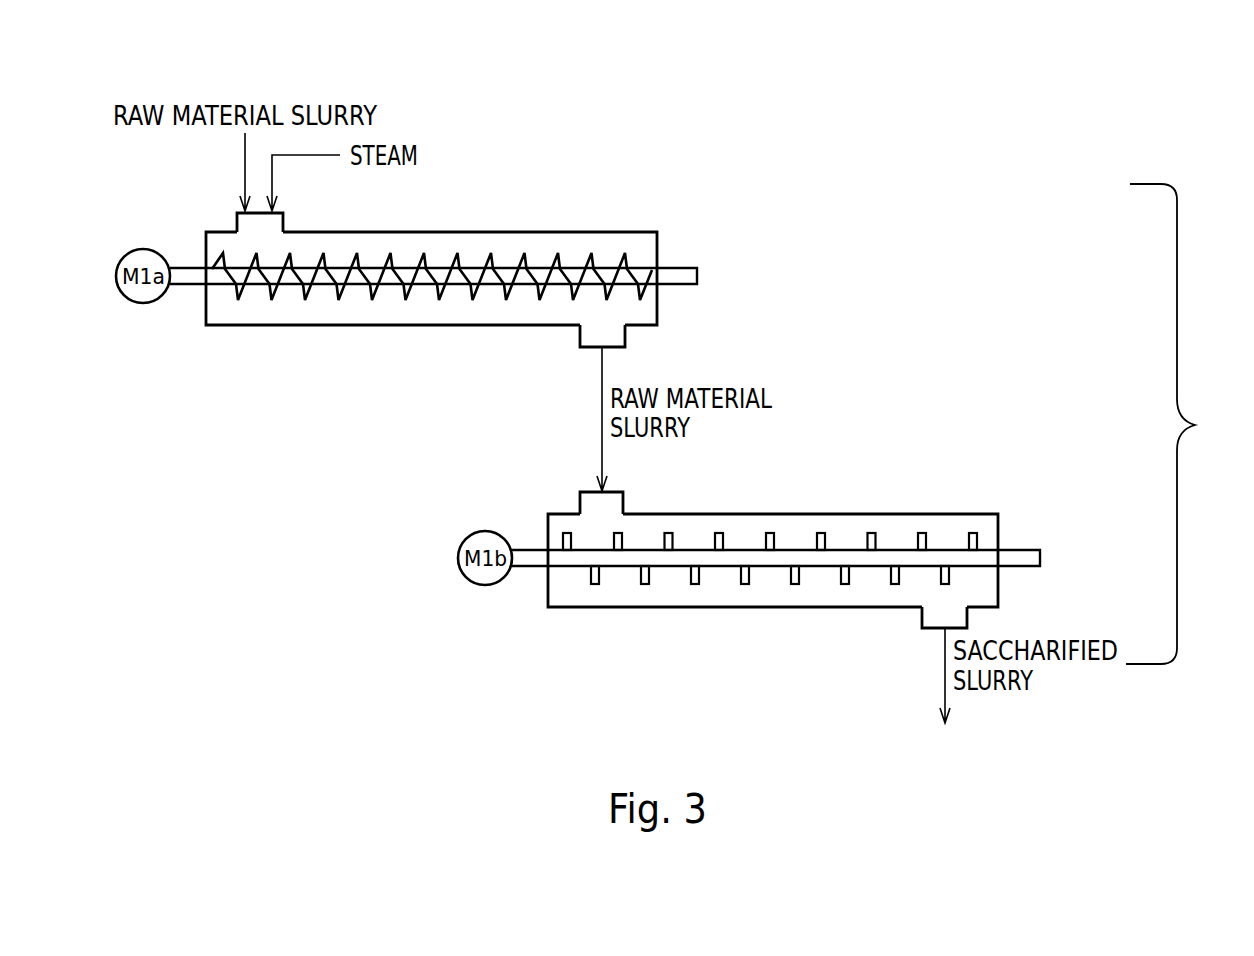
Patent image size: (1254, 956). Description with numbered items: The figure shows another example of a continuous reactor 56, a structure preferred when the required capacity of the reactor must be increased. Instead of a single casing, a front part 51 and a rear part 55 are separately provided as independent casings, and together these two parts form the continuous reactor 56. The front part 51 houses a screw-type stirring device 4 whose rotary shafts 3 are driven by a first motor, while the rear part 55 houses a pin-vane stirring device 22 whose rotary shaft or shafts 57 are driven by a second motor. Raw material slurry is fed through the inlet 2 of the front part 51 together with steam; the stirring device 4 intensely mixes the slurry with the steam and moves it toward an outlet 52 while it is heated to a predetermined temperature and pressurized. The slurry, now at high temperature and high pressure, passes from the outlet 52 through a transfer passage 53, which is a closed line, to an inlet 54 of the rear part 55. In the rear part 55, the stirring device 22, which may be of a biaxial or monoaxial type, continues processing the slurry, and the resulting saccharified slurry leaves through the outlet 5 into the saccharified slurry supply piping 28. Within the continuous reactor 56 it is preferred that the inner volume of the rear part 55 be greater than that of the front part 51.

The inlet of continuous reactor 2 is at (237, 222).
The front part 51 is at (477, 232).
The rotary shaft 3 is at (188, 284).
The stirring device 4 is at (340, 300).
The outlet of front part 52 is at (590, 347).
The transfer passage 53 is at (602, 420).
The inlet of rear part 54 is at (627, 503).
The rear part 55 is at (822, 514).
The rotary shaft 57 is at (575, 567).
The stirring device 22 is at (922, 533).
The outlet of continuous reactor 5 is at (932, 628).
The saccharified slurry supply piping 28 is at (945, 680).
The continuous reactor 56 is at (1178, 424).